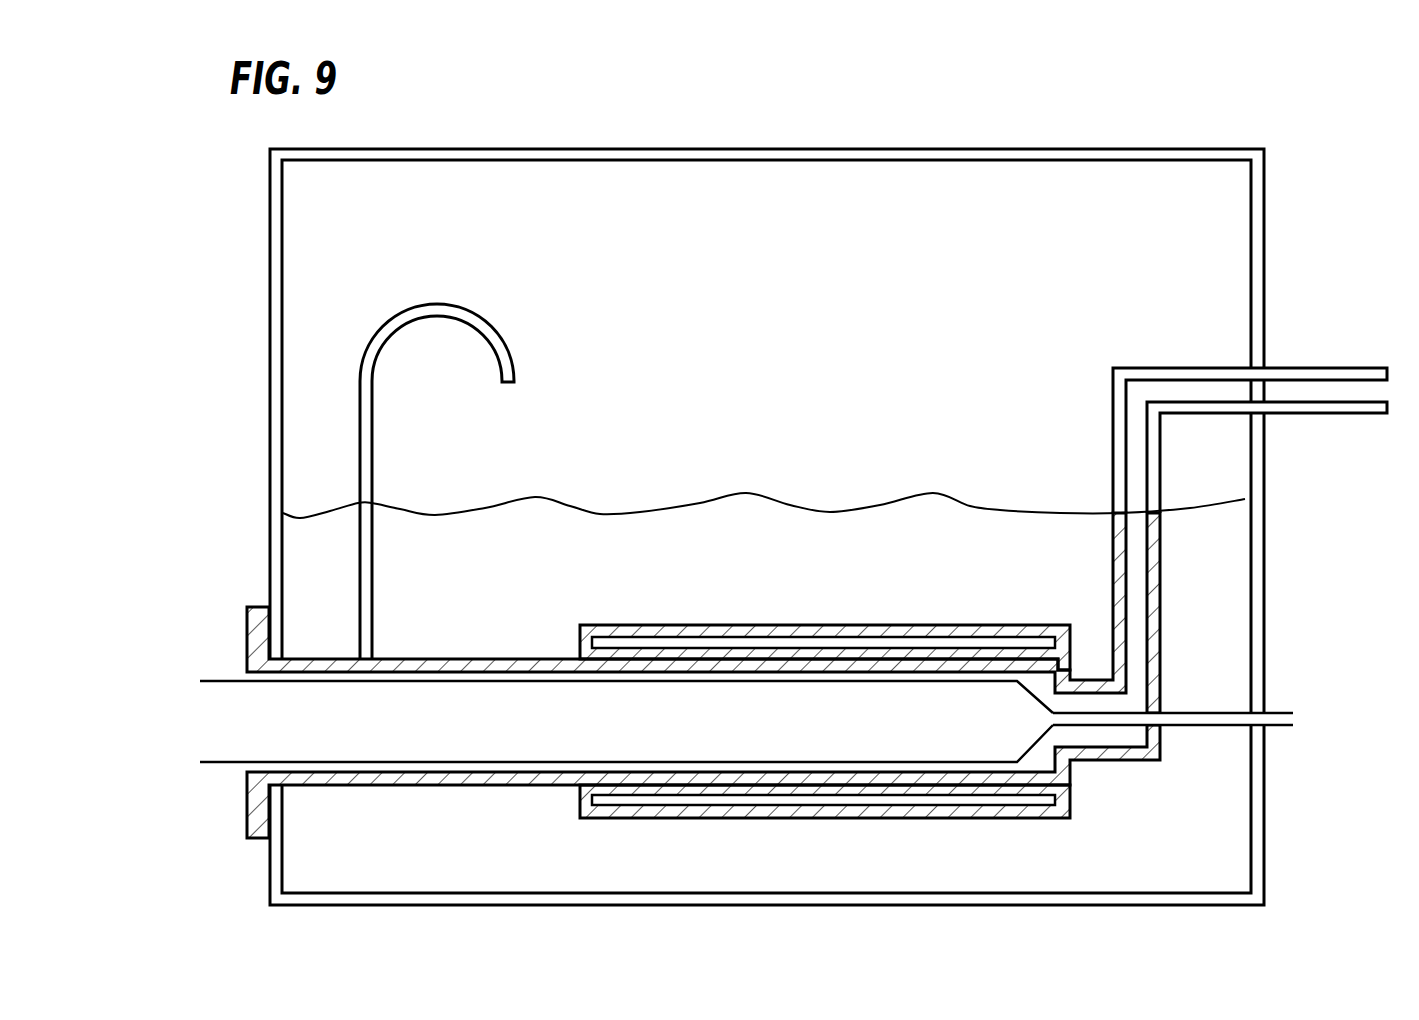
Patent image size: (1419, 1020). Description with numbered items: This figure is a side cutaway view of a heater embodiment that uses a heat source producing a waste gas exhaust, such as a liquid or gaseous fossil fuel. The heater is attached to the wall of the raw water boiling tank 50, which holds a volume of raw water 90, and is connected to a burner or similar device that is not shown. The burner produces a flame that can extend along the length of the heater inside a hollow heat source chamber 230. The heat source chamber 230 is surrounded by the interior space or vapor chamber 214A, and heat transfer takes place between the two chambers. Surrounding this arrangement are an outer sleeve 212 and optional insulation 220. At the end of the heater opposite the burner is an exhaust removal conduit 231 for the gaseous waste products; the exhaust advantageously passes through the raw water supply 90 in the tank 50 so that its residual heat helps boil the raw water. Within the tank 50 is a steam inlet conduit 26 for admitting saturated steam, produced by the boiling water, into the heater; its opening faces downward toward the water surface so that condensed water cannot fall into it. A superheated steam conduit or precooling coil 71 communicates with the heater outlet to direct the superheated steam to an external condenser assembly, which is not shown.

The steam inlet conduit 26 is at (513, 352).
The raw water boiling tank 50 is at (1265, 625).
The superheated steam conduit or precooling coil 71 is at (1330, 368).
The water 90 is at (1000, 506).
The outer sleeve 212 is at (622, 818).
The vapor chamber 214A is at (750, 675).
The insulation 220 is at (722, 797).
The heat source chamber 230 is at (272, 734).
The exhaust removal conduit 231 is at (1205, 718).